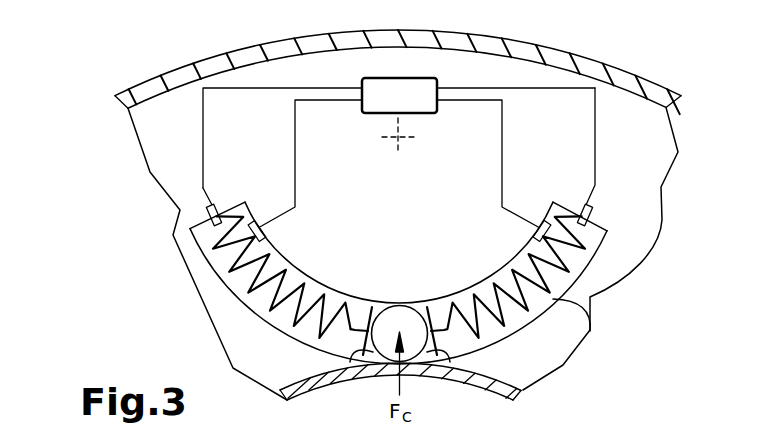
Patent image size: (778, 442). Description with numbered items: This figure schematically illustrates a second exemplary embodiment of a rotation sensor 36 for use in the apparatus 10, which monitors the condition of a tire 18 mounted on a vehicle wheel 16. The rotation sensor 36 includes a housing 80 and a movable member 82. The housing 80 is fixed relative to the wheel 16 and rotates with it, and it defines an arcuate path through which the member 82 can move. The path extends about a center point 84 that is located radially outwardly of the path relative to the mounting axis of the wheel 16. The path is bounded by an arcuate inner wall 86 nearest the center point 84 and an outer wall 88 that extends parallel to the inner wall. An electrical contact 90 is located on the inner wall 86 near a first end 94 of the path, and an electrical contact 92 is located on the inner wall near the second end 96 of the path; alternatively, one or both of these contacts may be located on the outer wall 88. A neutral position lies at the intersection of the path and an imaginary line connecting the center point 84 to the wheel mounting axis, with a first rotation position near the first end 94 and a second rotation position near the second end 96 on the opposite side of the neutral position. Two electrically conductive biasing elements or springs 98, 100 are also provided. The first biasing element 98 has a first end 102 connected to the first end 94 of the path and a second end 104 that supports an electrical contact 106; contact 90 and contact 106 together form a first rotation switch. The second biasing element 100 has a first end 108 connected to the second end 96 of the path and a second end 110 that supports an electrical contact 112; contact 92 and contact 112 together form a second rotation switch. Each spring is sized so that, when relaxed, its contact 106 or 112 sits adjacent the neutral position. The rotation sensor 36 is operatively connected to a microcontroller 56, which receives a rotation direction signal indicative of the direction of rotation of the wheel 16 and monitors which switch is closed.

The apparatus 10 is at (100, 70).
The wheel 16 is at (495, 393).
The tire 18 is at (618, 72).
The rotation sensor 36 is at (594, 270).
The microcontroller 56 is at (380, 78).
The housing 80 is at (614, 233).
The movable member 82 is at (408, 320).
The center point 84 is at (402, 140).
The inner wall 86 is at (324, 288).
The outer wall 88 is at (246, 300).
The electrical contact 90 is at (537, 223).
The electrical contact 92 is at (264, 232).
The first end of the path 94 is at (576, 208).
The second end of the path 96 is at (224, 207).
The first electrically conductive biasing element 98 is at (593, 333).
The second electrically conductive biasing element 100 is at (252, 287).
The first end of the first biasing element 102 is at (585, 223).
The second end of the first biasing element 104 is at (430, 318).
The electrical contact 106 is at (452, 348).
The first end of the second biasing element 108 is at (197, 222).
The second end of the second biasing element 110 is at (366, 306).
The electrical contact 112 is at (364, 351).